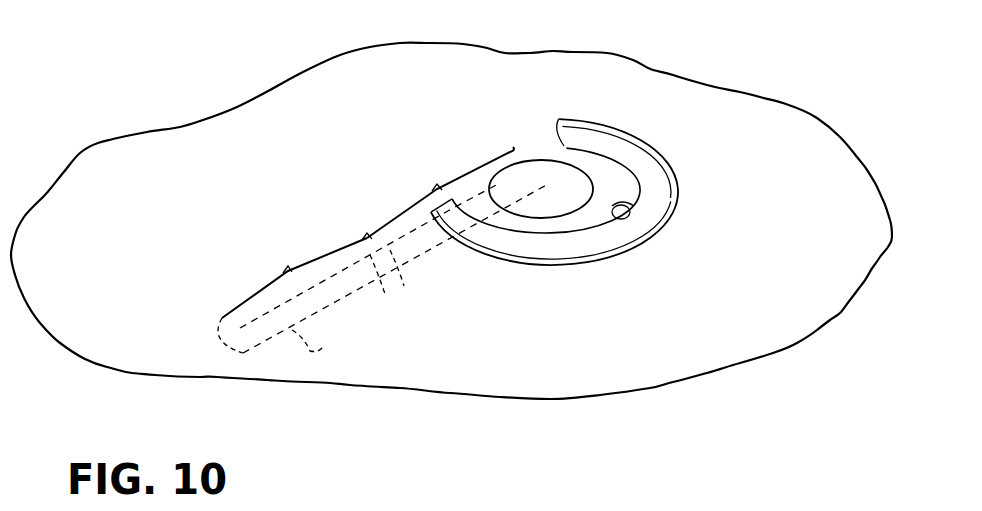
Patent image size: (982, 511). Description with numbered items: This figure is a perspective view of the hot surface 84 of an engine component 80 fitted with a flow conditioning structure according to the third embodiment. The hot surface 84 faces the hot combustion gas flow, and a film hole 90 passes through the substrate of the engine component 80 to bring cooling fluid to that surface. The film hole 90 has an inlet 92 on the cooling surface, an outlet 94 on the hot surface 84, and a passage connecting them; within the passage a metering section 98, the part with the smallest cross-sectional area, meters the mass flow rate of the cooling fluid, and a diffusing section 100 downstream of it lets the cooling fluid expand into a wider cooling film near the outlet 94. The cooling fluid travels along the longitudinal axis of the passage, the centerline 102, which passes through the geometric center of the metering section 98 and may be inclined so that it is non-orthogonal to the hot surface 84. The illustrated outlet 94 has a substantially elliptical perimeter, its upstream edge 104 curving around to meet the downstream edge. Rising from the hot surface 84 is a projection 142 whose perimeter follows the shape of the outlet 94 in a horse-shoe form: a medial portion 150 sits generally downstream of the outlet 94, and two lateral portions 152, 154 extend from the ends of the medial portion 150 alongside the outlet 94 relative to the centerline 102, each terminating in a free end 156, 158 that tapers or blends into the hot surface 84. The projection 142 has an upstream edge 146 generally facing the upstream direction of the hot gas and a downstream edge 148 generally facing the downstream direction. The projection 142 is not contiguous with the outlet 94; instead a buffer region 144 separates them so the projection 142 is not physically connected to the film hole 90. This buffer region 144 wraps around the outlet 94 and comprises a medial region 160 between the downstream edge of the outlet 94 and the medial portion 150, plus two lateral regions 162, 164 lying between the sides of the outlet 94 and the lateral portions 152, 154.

The engine component 80 is at (304, 86).
The hot surface 84 is at (249, 158).
The film hole 90 is at (391, 302).
The inlet 92 is at (292, 348).
The outlet 94 is at (572, 198).
The metering section 98 is at (294, 278).
The diffusing section 100 is at (438, 193).
The centerline 102 is at (327, 312).
The upstream edge of the outlet 104 is at (494, 166).
The projection 142 is at (605, 201).
The buffer region 144 is at (621, 153).
The upstream edge 146 is at (668, 215).
The downstream edge 148 is at (640, 240).
The medial portion 150 is at (618, 250).
The lateral portion 152 is at (600, 192).
The lateral portion 154 is at (470, 246).
The free end 156 is at (550, 143).
The free end 158 is at (449, 197).
The medial region 160 is at (674, 200).
The lateral region 162 is at (587, 170).
The lateral region 164 is at (512, 220).